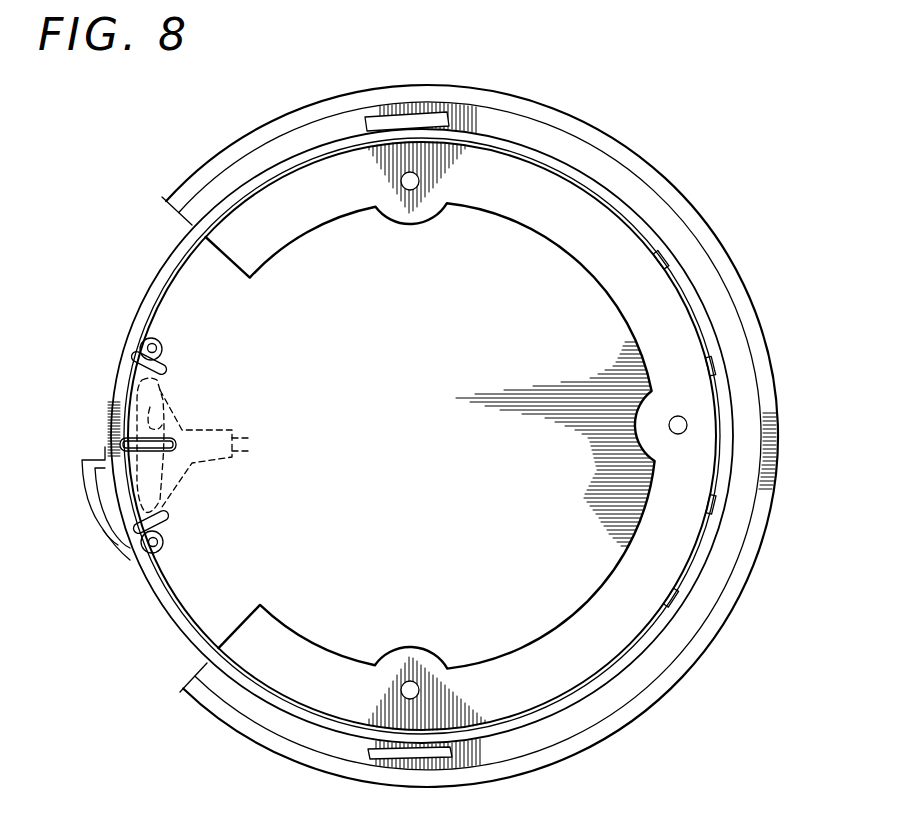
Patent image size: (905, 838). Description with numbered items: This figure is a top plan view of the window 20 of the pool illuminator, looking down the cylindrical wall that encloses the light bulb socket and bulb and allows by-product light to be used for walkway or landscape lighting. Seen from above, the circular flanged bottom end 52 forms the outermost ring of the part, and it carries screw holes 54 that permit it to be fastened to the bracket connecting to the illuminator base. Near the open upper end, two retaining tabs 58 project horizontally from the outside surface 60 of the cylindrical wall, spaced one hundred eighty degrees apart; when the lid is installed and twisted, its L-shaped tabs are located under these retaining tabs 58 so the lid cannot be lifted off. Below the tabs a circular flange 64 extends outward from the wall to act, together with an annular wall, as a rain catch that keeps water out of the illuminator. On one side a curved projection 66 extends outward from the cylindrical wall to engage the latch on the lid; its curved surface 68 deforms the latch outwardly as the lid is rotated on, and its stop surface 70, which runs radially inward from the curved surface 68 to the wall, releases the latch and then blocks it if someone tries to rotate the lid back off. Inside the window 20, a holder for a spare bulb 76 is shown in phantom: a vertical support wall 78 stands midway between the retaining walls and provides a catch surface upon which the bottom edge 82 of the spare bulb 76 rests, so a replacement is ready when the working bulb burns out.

The window 20 is at (176, 642).
The flanged bottom end 52 is at (262, 637).
The screw holes 54 is at (412, 190).
The retaining tabs 58 is at (418, 118).
The outside surface 60 is at (160, 613).
The circular flange 64 is at (245, 708).
The curved projection 66 is at (80, 500).
The curved surface 68 is at (104, 530).
The stop surface 70 is at (100, 458).
The spare bulb 76 is at (187, 412).
The vertical support wall 78 is at (110, 410).
The bottom edge 82 is at (200, 430).